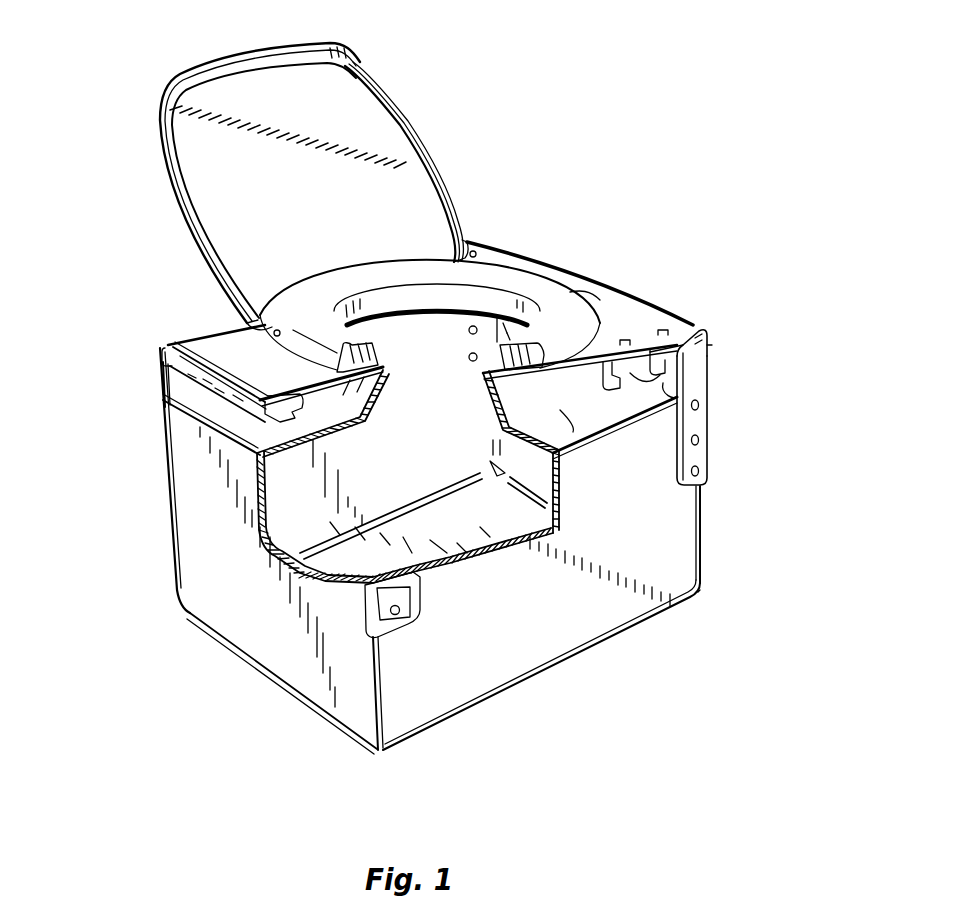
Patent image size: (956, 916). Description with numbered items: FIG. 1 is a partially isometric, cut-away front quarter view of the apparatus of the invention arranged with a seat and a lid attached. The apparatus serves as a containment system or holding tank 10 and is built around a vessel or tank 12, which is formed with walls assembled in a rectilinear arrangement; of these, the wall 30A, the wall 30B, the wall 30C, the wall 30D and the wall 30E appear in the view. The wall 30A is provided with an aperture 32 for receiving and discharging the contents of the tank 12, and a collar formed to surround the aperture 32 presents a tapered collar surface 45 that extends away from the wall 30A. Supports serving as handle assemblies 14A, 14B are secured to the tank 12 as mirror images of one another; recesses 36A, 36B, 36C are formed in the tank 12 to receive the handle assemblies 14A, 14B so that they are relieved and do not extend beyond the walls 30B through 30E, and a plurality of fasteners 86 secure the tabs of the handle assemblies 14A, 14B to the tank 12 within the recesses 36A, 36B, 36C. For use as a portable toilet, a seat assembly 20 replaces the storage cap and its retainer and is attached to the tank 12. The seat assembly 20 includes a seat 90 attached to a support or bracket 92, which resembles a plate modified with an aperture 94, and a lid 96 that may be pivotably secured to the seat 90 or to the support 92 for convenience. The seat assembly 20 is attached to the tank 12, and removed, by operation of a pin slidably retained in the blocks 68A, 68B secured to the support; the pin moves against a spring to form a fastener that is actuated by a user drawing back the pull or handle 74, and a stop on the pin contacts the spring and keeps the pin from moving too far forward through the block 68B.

The holding tank 10 is at (758, 554).
The tank 12 is at (675, 580).
The handle assembly 14A is at (163, 362).
The handle assembly 14B is at (714, 346).
The seat assembly 20 is at (588, 272).
The wall 30A is at (663, 383).
The wall 30B is at (677, 543).
The wall 30C is at (241, 625).
The wall 30D is at (451, 418).
The wall 30E is at (507, 333).
The aperture 32 is at (427, 344).
The recess 36A is at (712, 485).
The recess 36B is at (360, 622).
The recess 36C is at (168, 477).
The collar surface 45 is at (560, 432).
The block 68A is at (700, 398).
The block 68B is at (697, 330).
The pull 74 is at (613, 388).
The fasteners 86 is at (705, 470).
The seat 90 is at (497, 280).
The support 92 is at (610, 300).
The aperture 94 is at (385, 344).
The lid 96 is at (330, 100).